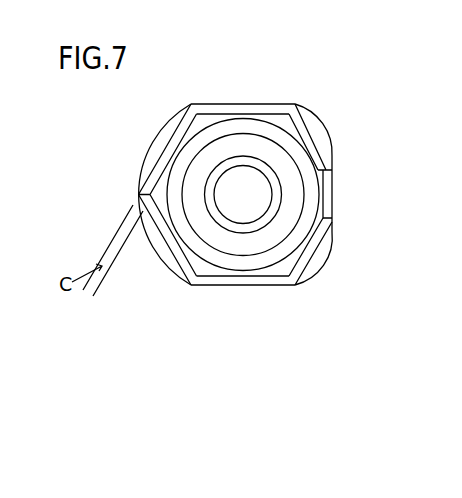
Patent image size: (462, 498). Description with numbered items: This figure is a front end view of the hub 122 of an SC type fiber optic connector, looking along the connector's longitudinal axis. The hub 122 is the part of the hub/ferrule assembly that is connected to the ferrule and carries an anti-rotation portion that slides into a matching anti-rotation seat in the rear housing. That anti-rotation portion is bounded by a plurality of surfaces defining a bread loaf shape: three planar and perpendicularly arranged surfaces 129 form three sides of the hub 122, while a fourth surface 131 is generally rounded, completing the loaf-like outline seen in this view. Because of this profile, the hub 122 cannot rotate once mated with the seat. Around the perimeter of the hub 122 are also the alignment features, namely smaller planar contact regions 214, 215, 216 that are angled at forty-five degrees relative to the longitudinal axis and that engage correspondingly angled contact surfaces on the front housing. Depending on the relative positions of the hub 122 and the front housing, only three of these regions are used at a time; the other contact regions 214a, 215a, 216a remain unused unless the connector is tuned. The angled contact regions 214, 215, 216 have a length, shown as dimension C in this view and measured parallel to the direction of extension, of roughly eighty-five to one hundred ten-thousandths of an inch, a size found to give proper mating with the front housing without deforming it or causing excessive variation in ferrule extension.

The planar surfaces 129 is at (238, 103).
The contact region 216 is at (265, 112).
The contact region 216a is at (316, 154).
The hub 122 is at (322, 124).
The contact region 214 is at (306, 253).
The contact region 214a is at (225, 283).
The contact region 215 is at (178, 258).
The contact region 215a is at (177, 135).
The fourth surface 131 is at (142, 158).